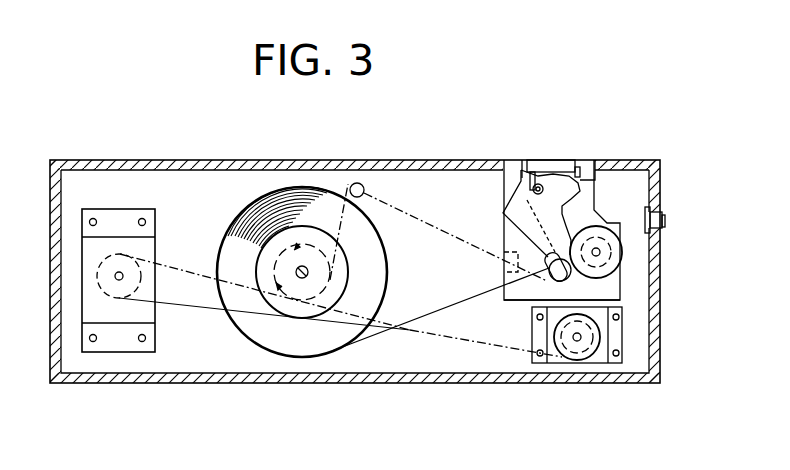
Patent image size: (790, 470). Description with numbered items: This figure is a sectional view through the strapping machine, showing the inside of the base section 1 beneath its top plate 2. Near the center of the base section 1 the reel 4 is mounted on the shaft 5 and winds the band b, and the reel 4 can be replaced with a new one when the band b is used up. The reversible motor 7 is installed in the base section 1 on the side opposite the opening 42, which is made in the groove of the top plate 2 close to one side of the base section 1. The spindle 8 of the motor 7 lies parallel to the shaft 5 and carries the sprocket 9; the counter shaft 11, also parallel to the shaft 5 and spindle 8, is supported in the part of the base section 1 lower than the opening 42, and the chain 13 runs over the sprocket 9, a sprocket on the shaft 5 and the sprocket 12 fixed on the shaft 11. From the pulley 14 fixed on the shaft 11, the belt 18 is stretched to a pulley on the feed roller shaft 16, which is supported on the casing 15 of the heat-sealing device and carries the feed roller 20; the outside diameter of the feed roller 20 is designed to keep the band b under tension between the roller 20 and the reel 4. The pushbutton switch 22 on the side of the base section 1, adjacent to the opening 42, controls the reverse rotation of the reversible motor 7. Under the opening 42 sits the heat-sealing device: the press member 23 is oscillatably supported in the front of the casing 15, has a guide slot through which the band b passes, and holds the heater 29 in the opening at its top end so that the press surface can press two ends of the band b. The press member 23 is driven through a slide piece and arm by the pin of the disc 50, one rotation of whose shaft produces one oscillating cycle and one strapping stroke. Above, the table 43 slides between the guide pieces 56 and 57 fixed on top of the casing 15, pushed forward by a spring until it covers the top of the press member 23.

The base section 1 is at (355, 274).
The top plate 2 is at (182, 160).
The reel 4 is at (311, 272).
The shaft 5 is at (308, 276).
The reversible motor 7 is at (134, 280).
The spindle 8 is at (118, 279).
The sprocket 9 is at (141, 278).
The counter shaft 11 is at (577, 341).
The sprocket 12 is at (591, 355).
The chain 13 is at (406, 334).
The pulley 14 is at (602, 337).
The casing 15 is at (517, 287).
The feed roller shaft 16 is at (628, 237).
The belt 18 is at (615, 292).
The feed roller 20 is at (621, 257).
The pushbutton switch 22 is at (665, 222).
The press member 23 is at (567, 230).
The heater 29 is at (533, 190).
The opening 42 is at (555, 158).
The table 43 is at (562, 168).
The disc 50 is at (543, 283).
The guide piece 56 is at (521, 176).
The guide piece 57 is at (587, 162).
The band b is at (519, 169).